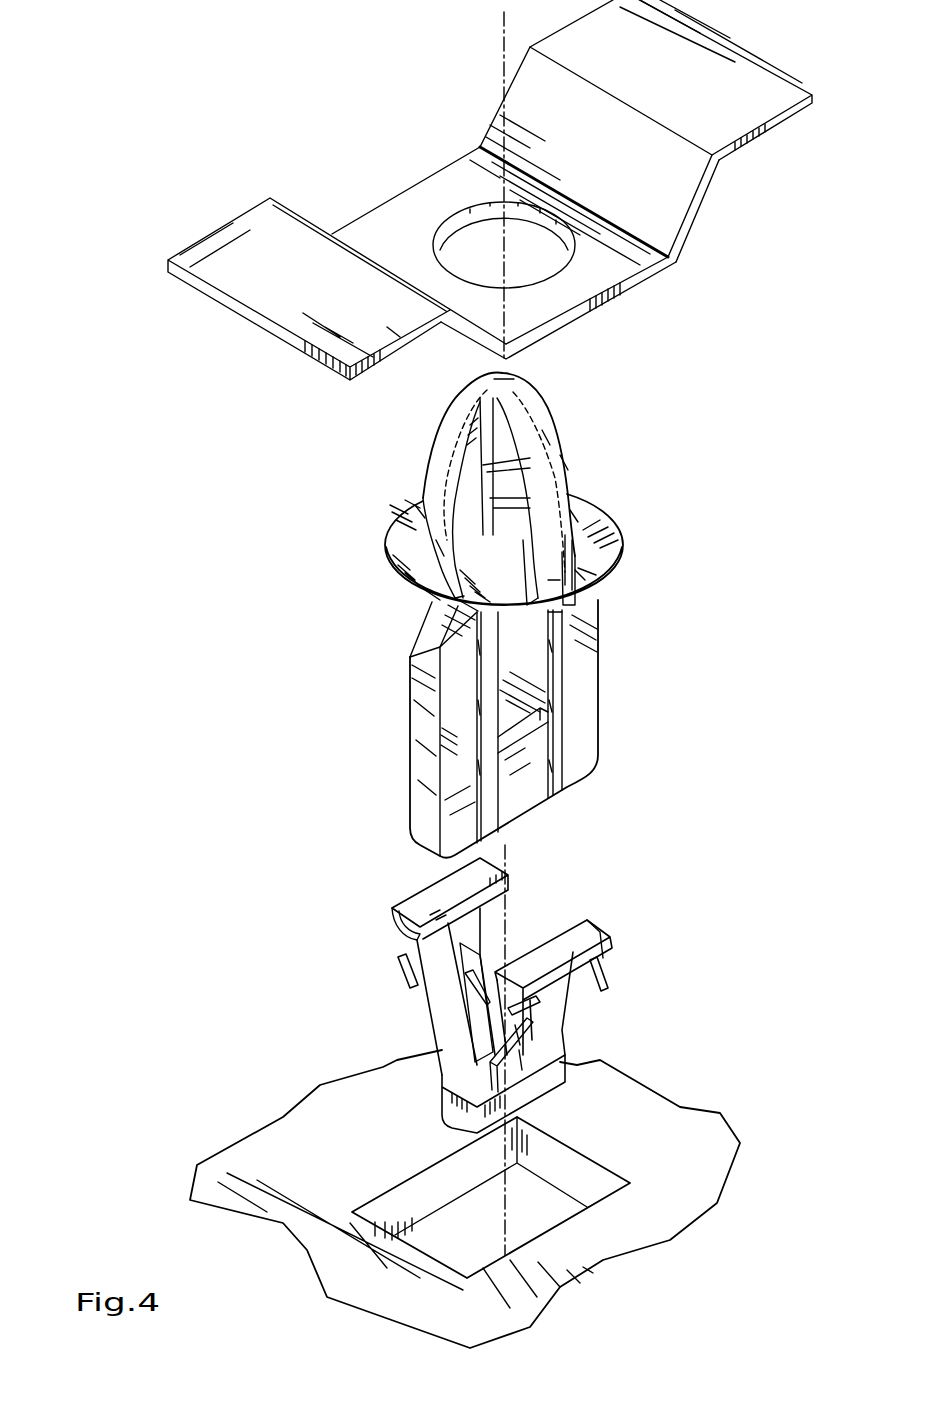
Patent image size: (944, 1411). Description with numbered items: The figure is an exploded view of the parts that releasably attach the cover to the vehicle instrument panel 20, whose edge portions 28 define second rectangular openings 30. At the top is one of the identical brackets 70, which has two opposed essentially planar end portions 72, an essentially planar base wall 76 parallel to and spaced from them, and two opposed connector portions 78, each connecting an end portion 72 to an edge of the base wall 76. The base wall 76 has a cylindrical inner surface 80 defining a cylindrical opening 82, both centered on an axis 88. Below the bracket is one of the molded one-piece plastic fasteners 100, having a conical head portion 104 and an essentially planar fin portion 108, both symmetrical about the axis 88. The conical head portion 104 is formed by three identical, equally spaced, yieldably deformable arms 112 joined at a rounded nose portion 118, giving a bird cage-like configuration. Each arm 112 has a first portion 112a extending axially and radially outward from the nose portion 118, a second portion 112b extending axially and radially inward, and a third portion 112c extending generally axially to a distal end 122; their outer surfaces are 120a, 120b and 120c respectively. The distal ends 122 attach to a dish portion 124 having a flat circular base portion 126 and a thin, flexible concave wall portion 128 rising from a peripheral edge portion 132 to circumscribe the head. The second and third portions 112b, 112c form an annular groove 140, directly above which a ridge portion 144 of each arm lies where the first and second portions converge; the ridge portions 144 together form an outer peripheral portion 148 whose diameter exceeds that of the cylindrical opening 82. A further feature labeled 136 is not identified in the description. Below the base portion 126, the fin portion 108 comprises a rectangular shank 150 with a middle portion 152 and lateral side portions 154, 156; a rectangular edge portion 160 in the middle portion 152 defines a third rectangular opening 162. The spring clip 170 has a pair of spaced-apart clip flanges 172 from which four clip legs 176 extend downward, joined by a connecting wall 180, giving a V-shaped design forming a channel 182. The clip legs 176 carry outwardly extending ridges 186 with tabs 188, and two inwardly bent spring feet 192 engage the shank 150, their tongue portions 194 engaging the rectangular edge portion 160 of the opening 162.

The vehicle instrument panel 20 is at (290, 1145).
The edge portions 28 is at (553, 1160).
The second rectangular openings 30 is at (520, 1198).
The bracket 70 is at (318, 128).
The end portions 72 is at (687, 58).
The base wall 76 is at (593, 277).
The connector portions 78 is at (700, 208).
The cylindrical inner surface 80 is at (477, 207).
The cylindrical opening 82 is at (472, 258).
The axis 88 is at (503, 63).
The fastener 100 is at (330, 575).
The conical head portion 104 is at (572, 416).
The fin portion 108 is at (621, 681).
The arms 112 is at (498, 445).
The first portion 112a is at (575, 472).
The second portion 112b is at (578, 520).
The third portion 112c is at (585, 578).
The nose portion 118 is at (508, 378).
The outer surface 120a is at (550, 440).
The outer surface 120b is at (410, 646).
The outer surface 120c is at (586, 545).
The distal end 122 is at (438, 576).
The dish portion 124 is at (640, 543).
The circular base portion 126 is at (578, 613).
The concave wall portion 128 is at (600, 512).
The peripheral edge portion 132 is at (560, 586).
The flange surface 136 is at (440, 546).
The annular groove 140 is at (405, 575).
The ridge portion 144 is at (403, 510).
The outer peripheral portion 148 is at (409, 522).
The shank 150 is at (422, 712).
The middle portion 152 is at (518, 790).
The lateral side portion 154 is at (488, 738).
The lateral side portion 156 is at (583, 740).
The rectangular edge portion 160 is at (527, 745).
The third rectangular opening 162 is at (540, 708).
The spring clip 170 is at (310, 944).
The clip flanges 172 is at (587, 933).
The clip legs 176 is at (432, 990).
The connecting wall 180 is at (460, 1115).
The channel 182 is at (460, 1020).
The ridges 186 is at (408, 978).
The tabs 188 is at (400, 960).
The spring feet 192 is at (455, 1045).
The tongue portions 194 is at (480, 983).